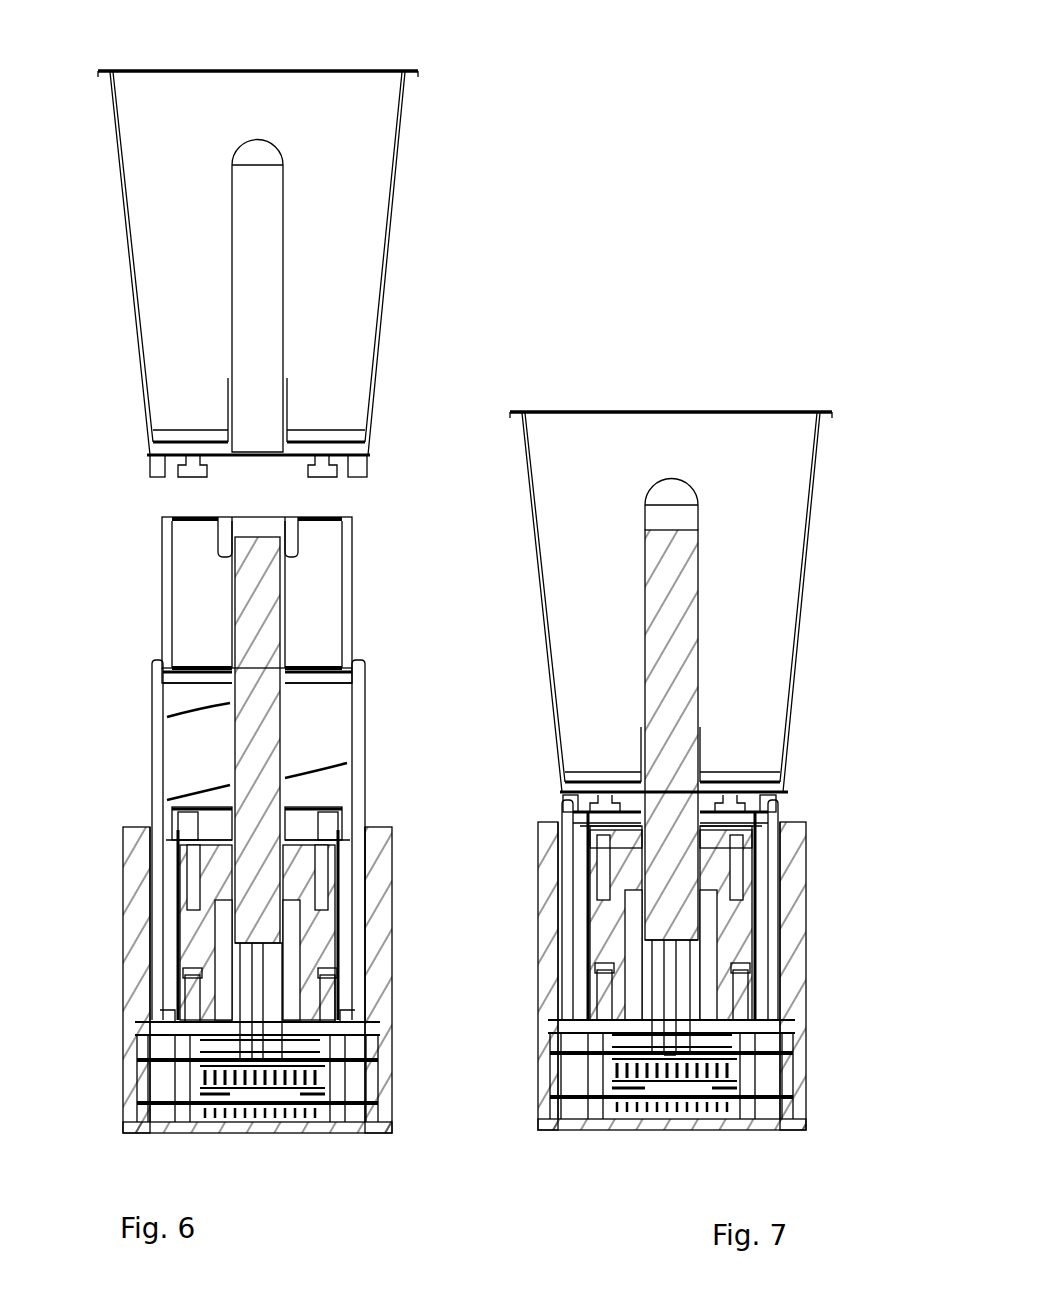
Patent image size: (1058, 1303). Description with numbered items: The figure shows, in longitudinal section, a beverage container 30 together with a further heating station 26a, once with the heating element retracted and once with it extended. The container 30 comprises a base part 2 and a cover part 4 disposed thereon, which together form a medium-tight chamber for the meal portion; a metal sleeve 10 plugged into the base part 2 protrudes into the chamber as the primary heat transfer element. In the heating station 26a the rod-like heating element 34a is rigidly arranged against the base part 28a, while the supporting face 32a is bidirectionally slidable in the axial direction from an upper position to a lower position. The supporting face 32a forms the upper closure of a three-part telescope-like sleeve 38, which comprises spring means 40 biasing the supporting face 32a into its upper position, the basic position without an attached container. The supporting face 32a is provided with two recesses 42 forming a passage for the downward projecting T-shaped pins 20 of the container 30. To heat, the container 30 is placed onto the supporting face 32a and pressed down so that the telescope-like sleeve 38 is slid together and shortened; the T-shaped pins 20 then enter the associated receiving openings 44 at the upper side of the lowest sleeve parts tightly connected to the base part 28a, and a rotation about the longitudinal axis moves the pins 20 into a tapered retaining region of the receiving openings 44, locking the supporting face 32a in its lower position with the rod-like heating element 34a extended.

In FIG. 6, the base part 2 is at (135, 312).
In FIG. 7, the base part 2 is at (797, 702).
In FIG. 6, the cover part 4 is at (260, 70).
In FIG. 7, the cover part 4 is at (690, 410).
In FIG. 6, the metal sleeve 10 is at (232, 222).
In FIG. 7, the metal sleeve 10 is at (700, 515).
In FIG. 6, the T-shaped pins 20 is at (330, 470).
In FIG. 7, the T-shaped pins 20 is at (735, 800).
In FIG. 6, the heating station 26a is at (231, 799).
In FIG. 7, the heating station 26a is at (680, 830).
In FIG. 6, the base part 28a is at (123, 895).
In FIG. 7, the base part 28a is at (803, 915).
In FIG. 6, the container 30 is at (314, 272).
In FIG. 7, the container 30 is at (689, 568).
In FIG. 6, the supporting face 32a is at (195, 522).
In FIG. 6, the rod-like heating element 34a is at (268, 596).
In FIG. 7, the rod-like heating element 34a is at (665, 647).
In FIG. 6, the telescope-like sleeve 38 is at (357, 702).
In FIG. 7, the telescope-like sleeve 38 is at (670, 910).
In FIG. 6, the spring means 40 is at (180, 707).
In FIG. 6, the recesses 42 is at (205, 522).
In FIG. 6, the receiving openings 44 is at (193, 812).